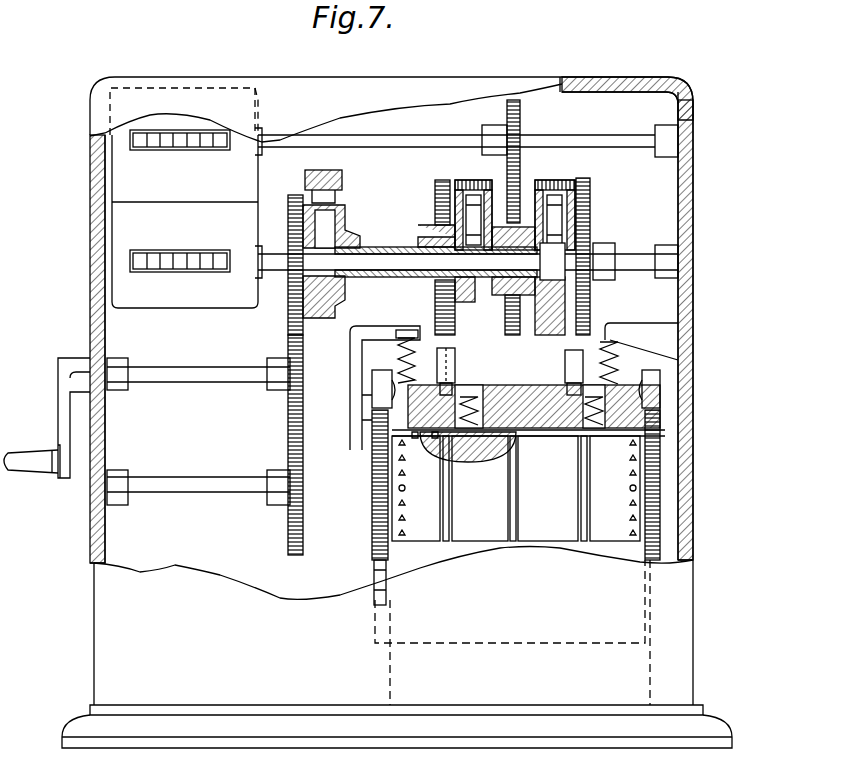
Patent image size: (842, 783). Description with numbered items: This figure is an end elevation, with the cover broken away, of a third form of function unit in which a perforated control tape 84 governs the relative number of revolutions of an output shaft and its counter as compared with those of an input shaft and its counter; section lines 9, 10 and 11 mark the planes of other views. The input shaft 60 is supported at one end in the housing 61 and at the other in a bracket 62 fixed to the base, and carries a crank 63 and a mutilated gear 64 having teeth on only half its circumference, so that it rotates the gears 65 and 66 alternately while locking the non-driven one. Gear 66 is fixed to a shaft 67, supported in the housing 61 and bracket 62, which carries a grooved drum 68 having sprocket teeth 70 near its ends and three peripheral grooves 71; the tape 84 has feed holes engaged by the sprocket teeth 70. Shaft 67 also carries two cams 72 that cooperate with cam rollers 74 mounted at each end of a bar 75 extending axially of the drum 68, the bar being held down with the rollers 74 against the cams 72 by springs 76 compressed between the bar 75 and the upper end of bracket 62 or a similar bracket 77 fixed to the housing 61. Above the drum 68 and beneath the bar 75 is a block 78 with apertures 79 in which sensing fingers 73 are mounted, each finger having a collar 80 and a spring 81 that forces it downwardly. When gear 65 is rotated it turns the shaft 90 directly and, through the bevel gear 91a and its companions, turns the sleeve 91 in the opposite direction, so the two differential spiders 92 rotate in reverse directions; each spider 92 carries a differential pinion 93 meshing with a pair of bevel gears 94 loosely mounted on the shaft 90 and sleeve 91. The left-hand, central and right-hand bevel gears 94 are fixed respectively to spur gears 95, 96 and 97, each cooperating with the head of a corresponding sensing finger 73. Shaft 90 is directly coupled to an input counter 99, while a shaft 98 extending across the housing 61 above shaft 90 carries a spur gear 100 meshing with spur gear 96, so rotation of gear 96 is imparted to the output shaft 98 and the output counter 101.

The section line 9- 9 is at (457, 766).
The section line 10- 10 is at (300, 600).
The section line 11- 11 is at (416, 338).
The input shaft 60 is at (140, 376).
The housing 61 is at (100, 284).
The bracket 62 is at (380, 330).
The crank 63 is at (62, 420).
The mutilated gear 64 is at (288, 345).
The gear 65 is at (288, 316).
The gear 66 is at (288, 440).
The shaft 67 is at (160, 486).
The grooved drum 68 is at (426, 520).
The sprocket teeth 70 is at (406, 486).
The peripheral grooves 71 is at (462, 538).
The cams 72 is at (388, 565).
The sensing fingers 73 is at (534, 488).
The cam rollers 74 is at (380, 390).
The bar 75 is at (478, 392).
The springs 76 is at (410, 340).
The bracket 77 is at (690, 330).
The block 78 is at (568, 372).
The apertures 79 is at (466, 448).
The collar 80 is at (420, 450).
The spring 81 is at (456, 372).
The control tape 84 is at (503, 440).
The shaft 90 is at (355, 250).
The sleeve 91 is at (385, 245).
The bevel gear 91a is at (292, 222).
The differential spiders 92 is at (588, 226).
The differential pinion 93 is at (510, 195).
The bevel gears 94 is at (582, 182).
The spur gear 95 is at (442, 190).
The spur gear 96 is at (522, 325).
The spur gear 97 is at (598, 300).
The output shaft 98 is at (408, 142).
The input counter 99 is at (133, 298).
The spur gear 100 is at (520, 112).
The output counter 101 is at (146, 190).